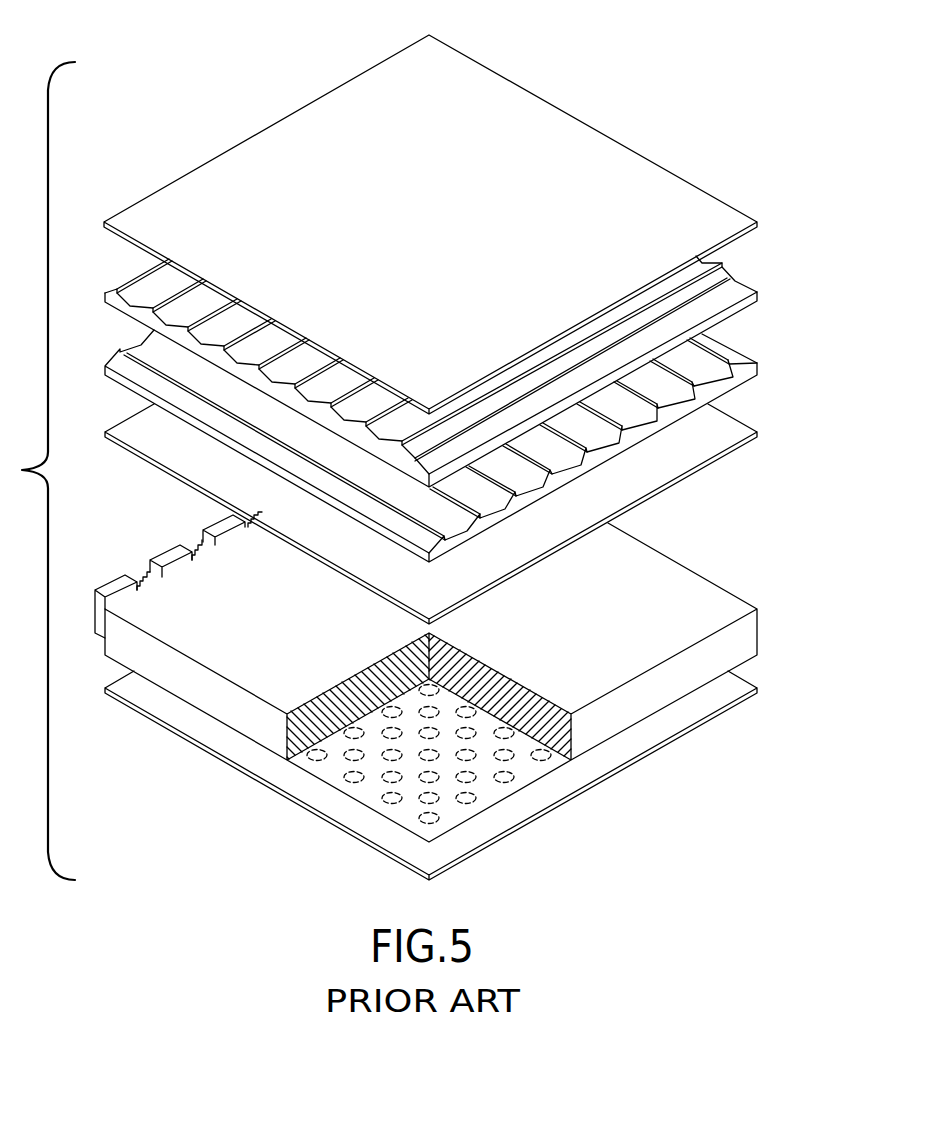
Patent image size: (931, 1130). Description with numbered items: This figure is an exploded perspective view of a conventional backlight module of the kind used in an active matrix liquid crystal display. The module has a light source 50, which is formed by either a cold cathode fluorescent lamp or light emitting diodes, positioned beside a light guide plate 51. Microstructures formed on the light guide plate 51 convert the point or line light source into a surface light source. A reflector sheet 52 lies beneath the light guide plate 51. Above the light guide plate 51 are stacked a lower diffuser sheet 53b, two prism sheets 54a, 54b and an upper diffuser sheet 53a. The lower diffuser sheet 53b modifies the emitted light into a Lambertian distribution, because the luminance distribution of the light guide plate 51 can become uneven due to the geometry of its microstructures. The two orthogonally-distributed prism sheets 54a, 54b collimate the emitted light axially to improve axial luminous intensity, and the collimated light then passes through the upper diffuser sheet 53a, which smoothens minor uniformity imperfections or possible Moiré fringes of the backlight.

The light source 50 is at (172, 552).
The light guide plate 51 is at (702, 603).
The reflector sheet 52 is at (718, 690).
The upper diffuser sheet 53a is at (652, 183).
The lower diffuser sheet 53b is at (713, 437).
The prism sheet 54a is at (742, 290).
The prism sheet 54b is at (733, 366).